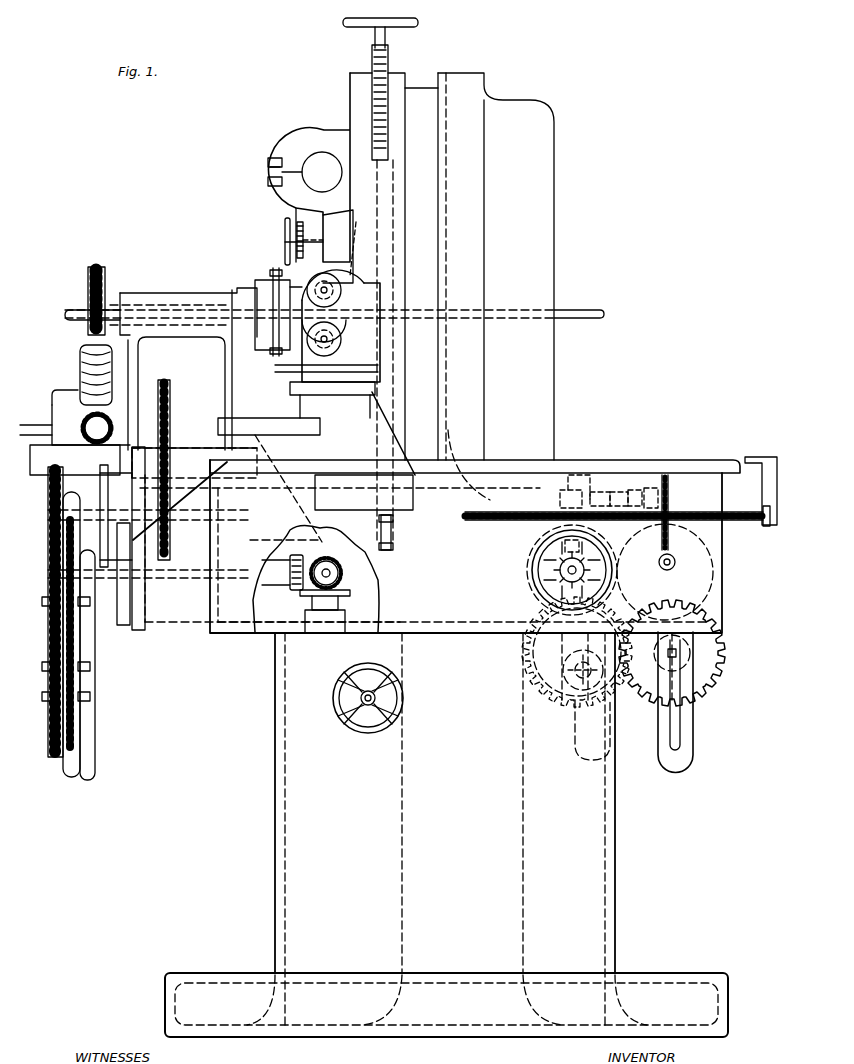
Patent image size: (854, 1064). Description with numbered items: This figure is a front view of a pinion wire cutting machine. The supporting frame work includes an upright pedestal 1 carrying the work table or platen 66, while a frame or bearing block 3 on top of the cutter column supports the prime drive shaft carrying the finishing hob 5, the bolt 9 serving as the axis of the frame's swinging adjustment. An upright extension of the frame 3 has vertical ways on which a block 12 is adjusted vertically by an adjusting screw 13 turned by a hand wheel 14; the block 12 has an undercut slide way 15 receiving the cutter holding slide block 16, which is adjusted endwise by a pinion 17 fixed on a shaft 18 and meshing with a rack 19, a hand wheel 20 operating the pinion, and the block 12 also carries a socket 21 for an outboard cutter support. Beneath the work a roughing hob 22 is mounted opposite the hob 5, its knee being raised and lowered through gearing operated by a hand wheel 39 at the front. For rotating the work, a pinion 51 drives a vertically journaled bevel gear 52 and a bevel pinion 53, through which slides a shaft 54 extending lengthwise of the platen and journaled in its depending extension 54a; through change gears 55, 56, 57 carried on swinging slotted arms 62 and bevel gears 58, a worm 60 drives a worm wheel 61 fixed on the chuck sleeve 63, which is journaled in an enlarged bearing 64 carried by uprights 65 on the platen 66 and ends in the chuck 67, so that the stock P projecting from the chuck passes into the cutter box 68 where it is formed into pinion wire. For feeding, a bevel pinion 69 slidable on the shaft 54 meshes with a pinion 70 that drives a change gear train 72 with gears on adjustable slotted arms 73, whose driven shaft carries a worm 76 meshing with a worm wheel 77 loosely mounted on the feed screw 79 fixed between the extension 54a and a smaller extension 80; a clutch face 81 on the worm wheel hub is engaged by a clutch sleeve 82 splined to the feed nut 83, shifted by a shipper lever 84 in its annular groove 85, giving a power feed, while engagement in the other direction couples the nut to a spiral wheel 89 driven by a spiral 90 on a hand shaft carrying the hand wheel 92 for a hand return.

The upright pedestal 1 is at (275, 798).
The frame or bearing block 3 is at (554, 262).
The hob 5 is at (326, 280).
The bolt 9 is at (393, 540).
The block 12 is at (330, 130).
The adjusting screw 13 is at (392, 90).
The hand wheel 14 is at (410, 20).
The undercut slide way 15 is at (361, 244).
The cutter holding slide block 16 is at (338, 246).
The pinion 17 is at (300, 262).
The shaft 18 is at (297, 243).
The rack 19 is at (303, 218).
The hand wheel 20 is at (285, 226).
The socket 21 is at (342, 165).
The hob 22 is at (334, 346).
The hand wheel 39 is at (403, 698).
The pinion 51 is at (344, 565).
The bevel gear 52 is at (333, 594).
The bevel pinion 53 is at (296, 558).
The shaft 54 is at (258, 580).
The depending extension 54a is at (146, 590).
The change gear 55 is at (76, 622).
The change gear 56 is at (50, 634).
The change gear 57 is at (171, 468).
The bevel gears 58 is at (100, 441).
The worm 60 is at (82, 378).
The worm wheel 61 is at (90, 290).
The swinging slotted arms 62 is at (76, 776).
The chuck sleeve 63 is at (122, 305).
The enlarged bearing 64 is at (192, 293).
The uprights 65 is at (225, 370).
The platen 66 is at (222, 458).
The chuck 67 is at (268, 276).
The cutter box 68 is at (383, 283).
The bevel pinion 69 is at (546, 588).
The pinion 70 is at (600, 612).
The change gear train 72 is at (648, 700).
The adjustable slotted arms 73 is at (612, 745).
The worm 76 is at (675, 562).
The worm wheel 77 is at (669, 484).
The feed screw 79 is at (733, 522).
The extension 80 is at (762, 494).
The clutch face 81 is at (654, 491).
The clutch sleeve 82 is at (619, 489).
The nut 83 is at (600, 489).
The shipper lever 84 is at (638, 489).
The peripheral annular groove 85 is at (646, 546).
The spiral wheel 89 is at (575, 491).
The spiral 90 is at (605, 582).
The hand wheel 92 is at (531, 562).
The stock P is at (600, 309).